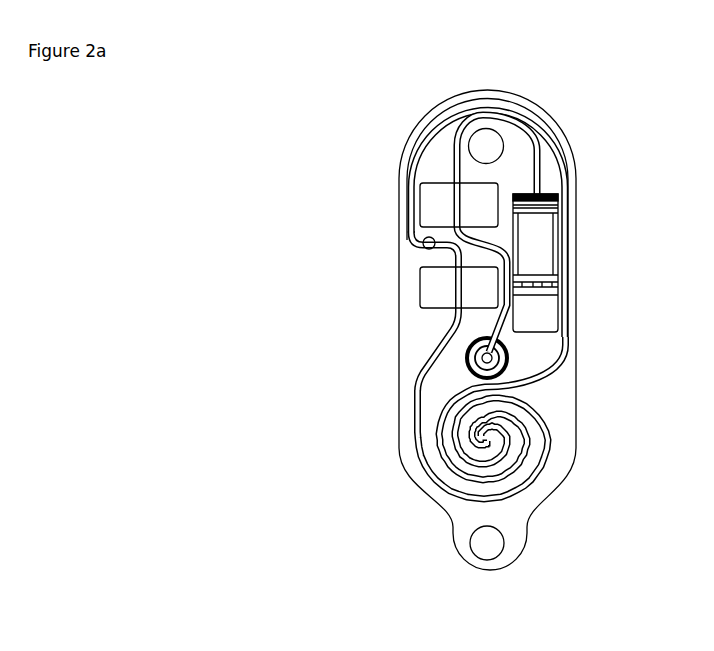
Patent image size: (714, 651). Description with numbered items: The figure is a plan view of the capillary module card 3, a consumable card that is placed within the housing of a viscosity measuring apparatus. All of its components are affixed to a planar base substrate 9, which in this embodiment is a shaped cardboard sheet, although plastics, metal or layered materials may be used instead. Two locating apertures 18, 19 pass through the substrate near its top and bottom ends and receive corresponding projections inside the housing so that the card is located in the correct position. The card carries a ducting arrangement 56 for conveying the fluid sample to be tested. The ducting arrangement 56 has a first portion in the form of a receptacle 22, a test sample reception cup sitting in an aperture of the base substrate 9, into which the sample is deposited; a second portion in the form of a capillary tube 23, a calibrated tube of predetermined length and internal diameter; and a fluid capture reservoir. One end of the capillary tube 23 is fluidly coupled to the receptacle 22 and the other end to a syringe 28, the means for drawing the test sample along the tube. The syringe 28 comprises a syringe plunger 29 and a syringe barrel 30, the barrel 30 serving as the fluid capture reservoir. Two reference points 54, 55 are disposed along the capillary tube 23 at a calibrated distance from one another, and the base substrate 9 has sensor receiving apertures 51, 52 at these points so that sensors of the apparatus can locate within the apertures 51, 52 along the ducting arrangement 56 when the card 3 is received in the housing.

The capillary module card 3 is at (482, 323).
The base substrate 9 is at (487, 90).
The locating aperture 18 is at (490, 134).
The locating aperture 19 is at (488, 553).
The receptacle 22 is at (506, 374).
The capillary tube 23 is at (548, 135).
The syringe 28 is at (562, 197).
The syringe plunger 29 is at (558, 294).
The syringe barrel 30 is at (562, 209).
The sensor receiving aperture 51 is at (421, 193).
The sensor receiving aperture 52 is at (421, 275).
The reference point 54 is at (458, 198).
The reference point 55 is at (460, 288).
The ducting arrangement 56 is at (407, 367).